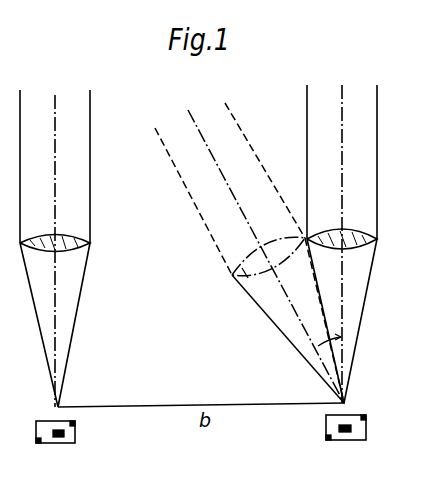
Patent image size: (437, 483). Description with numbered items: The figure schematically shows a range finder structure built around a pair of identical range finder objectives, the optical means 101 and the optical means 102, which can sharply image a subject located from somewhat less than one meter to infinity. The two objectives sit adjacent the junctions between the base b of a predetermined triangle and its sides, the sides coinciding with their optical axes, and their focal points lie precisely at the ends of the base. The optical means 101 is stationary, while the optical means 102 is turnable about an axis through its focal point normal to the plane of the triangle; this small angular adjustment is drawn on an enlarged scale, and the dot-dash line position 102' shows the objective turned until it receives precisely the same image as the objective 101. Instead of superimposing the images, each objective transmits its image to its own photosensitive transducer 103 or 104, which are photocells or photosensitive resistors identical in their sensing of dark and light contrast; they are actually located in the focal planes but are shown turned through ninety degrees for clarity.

The optical means 101 is at (72, 251).
The optical means 102 is at (360, 222).
The dot-dash line position of objective 102 102' is at (259, 281).
The photosensitive transducer 103 is at (55, 444).
The photosensitive transducer 104 is at (355, 440).